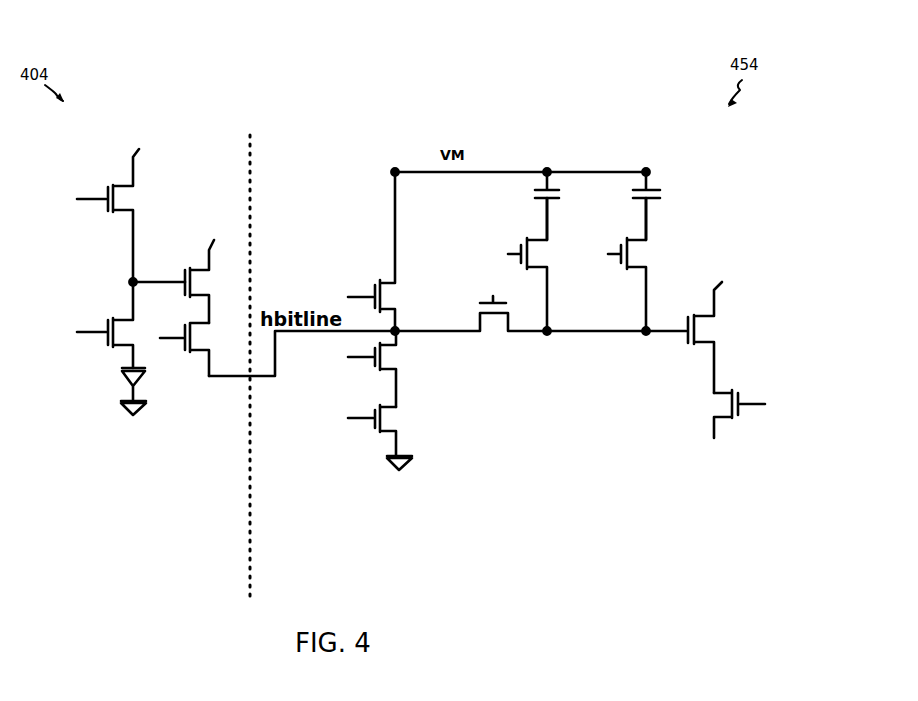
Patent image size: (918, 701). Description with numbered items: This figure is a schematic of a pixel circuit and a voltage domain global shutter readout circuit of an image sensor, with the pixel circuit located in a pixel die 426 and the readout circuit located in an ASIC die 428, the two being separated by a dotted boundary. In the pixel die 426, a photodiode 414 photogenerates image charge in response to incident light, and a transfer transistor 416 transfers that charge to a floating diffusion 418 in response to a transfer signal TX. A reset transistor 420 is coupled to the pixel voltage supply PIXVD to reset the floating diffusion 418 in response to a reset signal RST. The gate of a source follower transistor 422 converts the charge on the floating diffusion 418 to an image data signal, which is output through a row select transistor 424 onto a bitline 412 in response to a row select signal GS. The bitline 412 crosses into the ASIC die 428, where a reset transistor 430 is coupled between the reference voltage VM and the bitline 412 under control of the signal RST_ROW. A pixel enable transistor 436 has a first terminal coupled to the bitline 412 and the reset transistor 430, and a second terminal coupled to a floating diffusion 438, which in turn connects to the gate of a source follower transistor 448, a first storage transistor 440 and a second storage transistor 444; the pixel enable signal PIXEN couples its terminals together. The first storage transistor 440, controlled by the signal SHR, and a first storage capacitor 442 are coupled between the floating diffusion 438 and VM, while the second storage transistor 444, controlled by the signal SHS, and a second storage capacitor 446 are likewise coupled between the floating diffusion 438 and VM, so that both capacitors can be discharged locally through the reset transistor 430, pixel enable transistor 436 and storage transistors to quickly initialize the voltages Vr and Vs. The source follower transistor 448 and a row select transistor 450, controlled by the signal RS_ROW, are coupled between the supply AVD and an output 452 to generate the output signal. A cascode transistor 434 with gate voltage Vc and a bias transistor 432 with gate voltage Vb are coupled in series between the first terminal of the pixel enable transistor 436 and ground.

The bitline 412 is at (227, 385).
The photodiode 414 is at (108, 385).
The transfer transistor 416 is at (105, 336).
The floating diffusion 418 is at (122, 272).
The reset transistor 420 is at (103, 211).
The source follower transistor 422 is at (207, 280).
The row select transistor 424 is at (207, 340).
The pixel die 426 is at (197, 586).
The ASIC die 428 is at (330, 586).
The reset transistor 430 is at (373, 274).
The bias transistor 432 is at (378, 437).
The cascode transistor 434 is at (373, 372).
The pixel enable transistor 436 is at (483, 341).
The floating diffusion 438 is at (591, 340).
The first storage transistor 440 is at (521, 249).
The first storage capacitor 442 is at (530, 197).
The second storage transistor 444 is at (612, 265).
The second storage capacitor 446 is at (624, 197).
The source follower transistor 448 is at (720, 324).
The row select transistor 450 is at (738, 383).
The output 452 is at (735, 447).